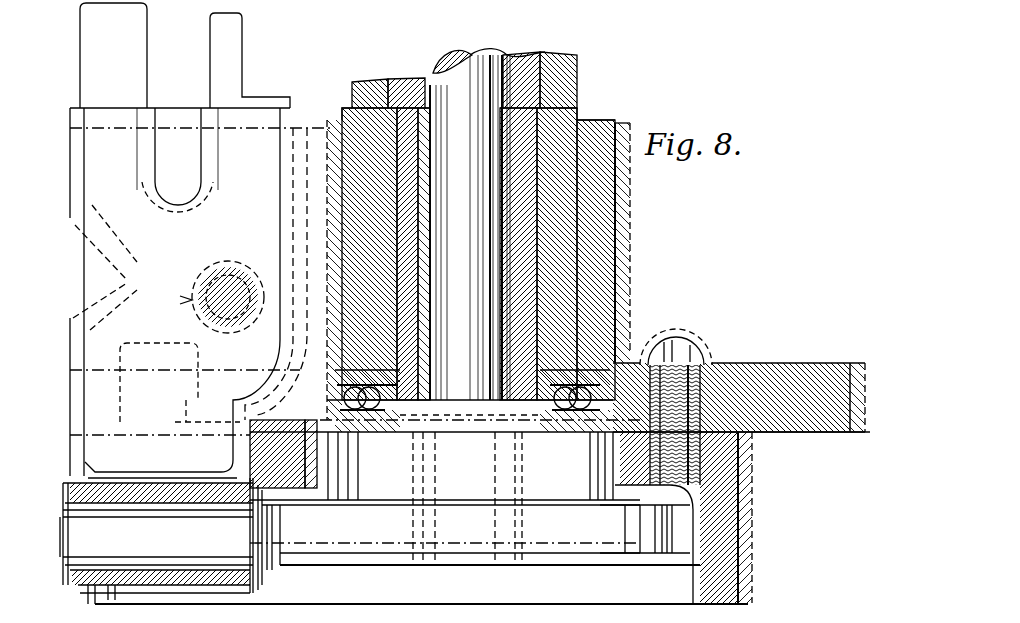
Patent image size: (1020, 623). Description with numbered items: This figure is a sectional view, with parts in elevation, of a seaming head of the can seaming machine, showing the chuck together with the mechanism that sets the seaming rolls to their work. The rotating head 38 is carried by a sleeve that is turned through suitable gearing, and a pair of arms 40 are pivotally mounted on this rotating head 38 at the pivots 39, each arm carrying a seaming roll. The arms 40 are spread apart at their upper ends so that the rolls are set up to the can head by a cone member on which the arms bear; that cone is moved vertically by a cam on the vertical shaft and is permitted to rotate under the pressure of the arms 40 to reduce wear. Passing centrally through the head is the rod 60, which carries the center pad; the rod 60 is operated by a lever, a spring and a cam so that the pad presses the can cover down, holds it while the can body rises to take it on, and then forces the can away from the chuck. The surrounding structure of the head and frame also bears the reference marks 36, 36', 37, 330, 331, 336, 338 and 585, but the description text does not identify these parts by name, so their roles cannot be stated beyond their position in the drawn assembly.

The rotating head 38 is at (310, 126).
The bracket web 36 is at (108, 267).
The pivot 39 is at (232, 258).
The arm 40 is at (190, 300).
The lower shaft 331 is at (166, 541).
The base body 330 is at (560, 492).
The base plate 585 is at (555, 570).
The bearing housing 37 is at (480, 240).
The rod 60 is at (440, 85).
The housing wall 336 is at (631, 266).
The flange 338 is at (748, 362).
The lower housing 36' is at (691, 517).